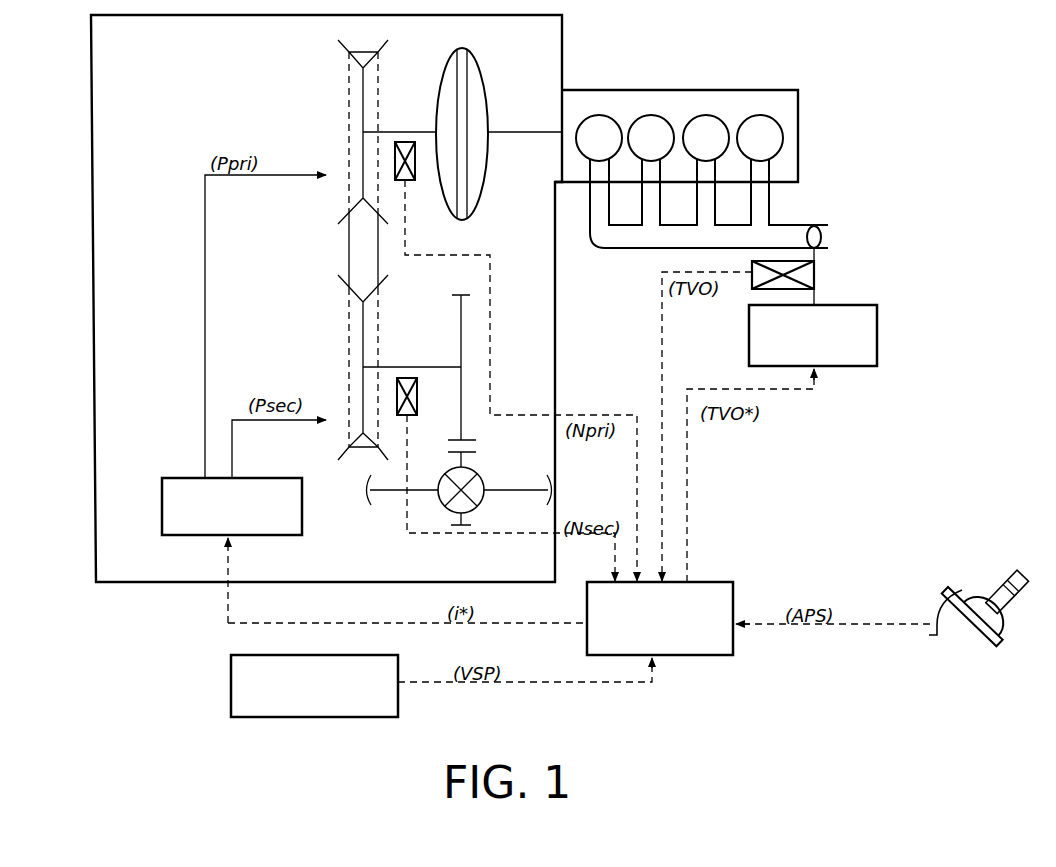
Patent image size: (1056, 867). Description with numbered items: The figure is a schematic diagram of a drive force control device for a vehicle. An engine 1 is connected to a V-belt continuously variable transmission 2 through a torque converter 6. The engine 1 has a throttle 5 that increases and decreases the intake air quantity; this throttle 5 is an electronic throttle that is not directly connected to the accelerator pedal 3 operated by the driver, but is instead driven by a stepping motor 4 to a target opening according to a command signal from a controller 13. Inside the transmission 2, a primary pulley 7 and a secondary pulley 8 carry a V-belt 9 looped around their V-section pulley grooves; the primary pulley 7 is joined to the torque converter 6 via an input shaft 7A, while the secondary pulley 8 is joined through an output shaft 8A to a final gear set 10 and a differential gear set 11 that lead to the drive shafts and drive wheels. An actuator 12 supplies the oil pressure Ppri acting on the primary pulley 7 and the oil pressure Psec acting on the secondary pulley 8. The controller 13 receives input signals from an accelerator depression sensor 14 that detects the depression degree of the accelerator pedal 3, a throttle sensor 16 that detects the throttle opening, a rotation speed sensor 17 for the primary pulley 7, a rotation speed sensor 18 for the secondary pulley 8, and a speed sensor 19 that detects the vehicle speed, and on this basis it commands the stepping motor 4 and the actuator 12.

The engine 1 is at (710, 91).
The V-belt continuously variable transmission 2 is at (90, 69).
The accelerator pedal 3 is at (955, 586).
The stepping motor 4 is at (848, 305).
The throttle 5 is at (822, 237).
The torque converter 6 is at (478, 62).
The primary pulley 7 is at (338, 46).
The input shaft 7A is at (399, 140).
The secondary pulley 8 is at (343, 288).
The output shaft 8A is at (408, 366).
The V-belt 9 is at (349, 245).
The final gear set 10 is at (470, 448).
The differential gear set 11 is at (483, 482).
The actuator 12 is at (302, 515).
The controller 13 is at (724, 582).
The accelerator depression sensor 14 is at (940, 612).
The throttle sensor 16 is at (756, 290).
The rotation speed sensor 17 is at (407, 182).
The rotation speed sensor 18 is at (417, 400).
The speed sensor 19 is at (232, 662).